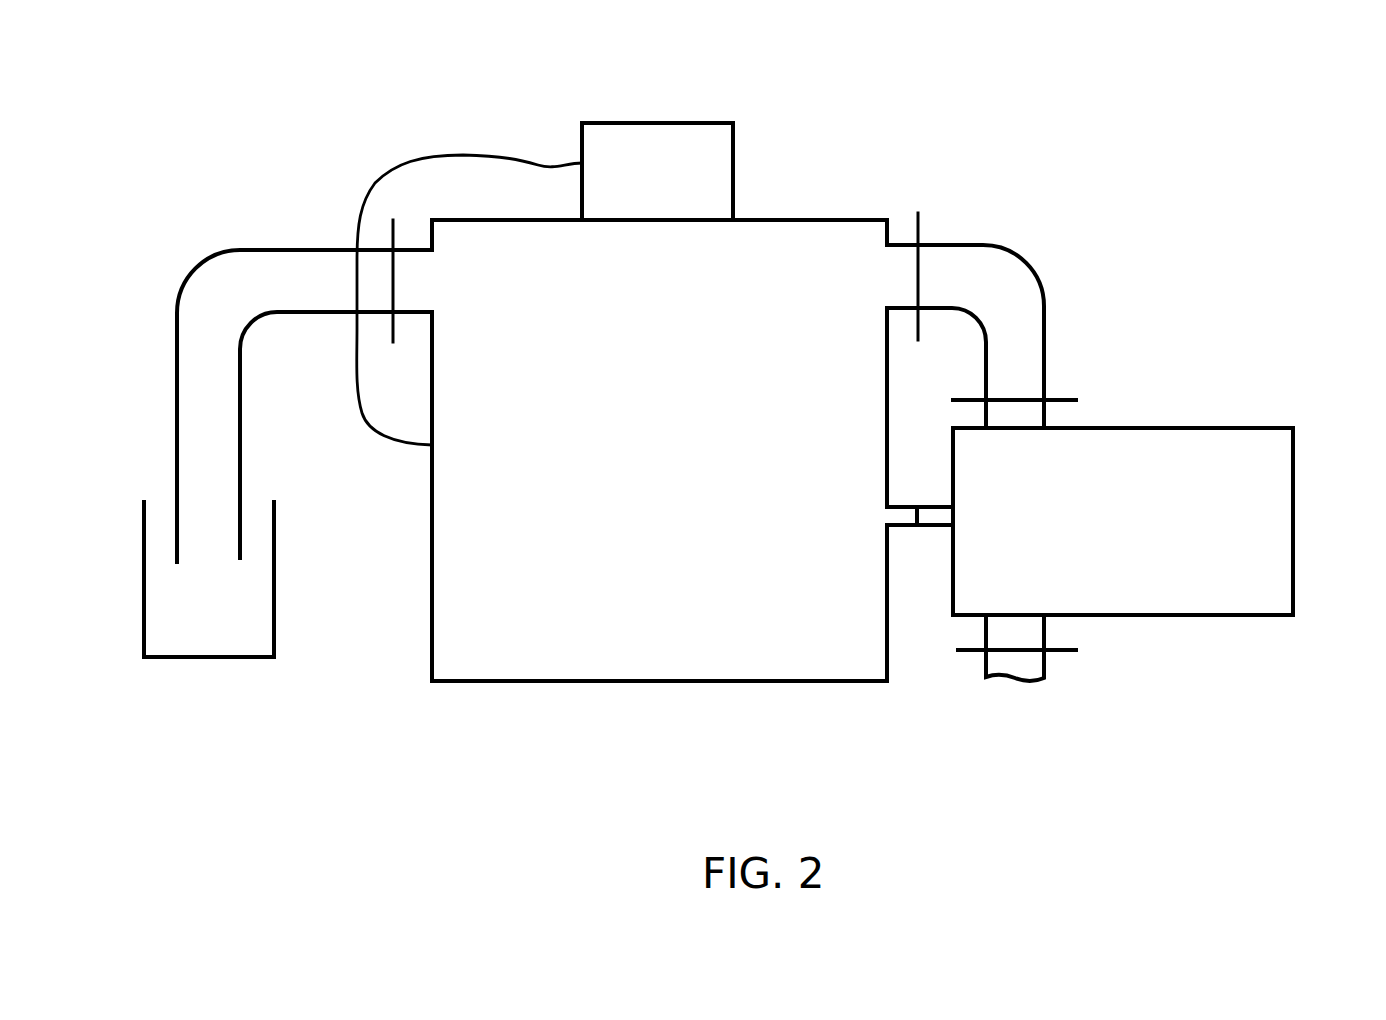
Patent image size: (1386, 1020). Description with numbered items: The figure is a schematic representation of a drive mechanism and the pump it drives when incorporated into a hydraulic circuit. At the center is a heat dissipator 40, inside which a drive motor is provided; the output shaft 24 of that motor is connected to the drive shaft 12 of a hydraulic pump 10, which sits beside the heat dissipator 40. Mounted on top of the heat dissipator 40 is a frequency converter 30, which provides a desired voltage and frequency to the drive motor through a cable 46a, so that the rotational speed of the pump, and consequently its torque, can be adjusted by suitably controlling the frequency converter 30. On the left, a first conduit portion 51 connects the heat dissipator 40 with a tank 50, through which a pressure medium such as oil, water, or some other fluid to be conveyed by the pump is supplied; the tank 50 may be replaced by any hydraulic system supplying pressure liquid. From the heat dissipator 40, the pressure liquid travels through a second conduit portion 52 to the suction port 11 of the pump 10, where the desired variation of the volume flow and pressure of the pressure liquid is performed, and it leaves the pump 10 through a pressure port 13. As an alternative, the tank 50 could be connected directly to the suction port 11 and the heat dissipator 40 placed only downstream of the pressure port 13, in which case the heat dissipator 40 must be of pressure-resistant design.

The hydraulic pump 10 is at (1254, 562).
The suction port 11 is at (1021, 420).
The drive shaft 12 is at (932, 518).
The pressure port 13 is at (1026, 628).
The output shaft 24 is at (902, 518).
The frequency converter 30 is at (683, 148).
The heat dissipator 40 is at (633, 642).
The cable 46a is at (493, 153).
The tank 50 is at (242, 607).
The first conduit portion 51 is at (238, 275).
The second conduit portion 52 is at (963, 254).